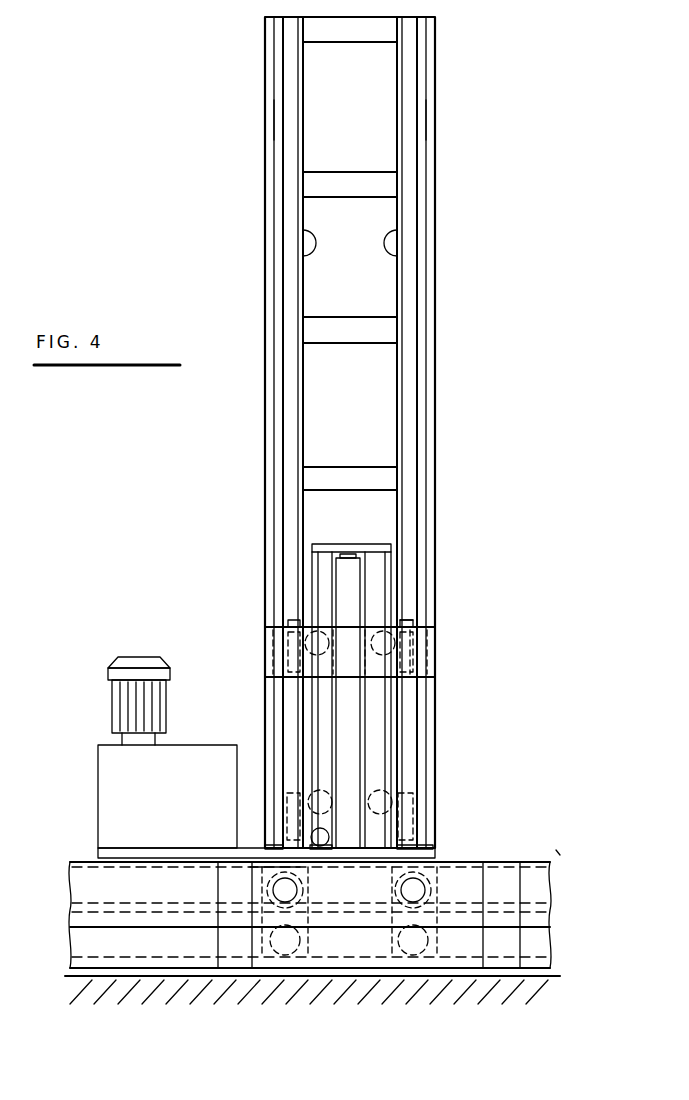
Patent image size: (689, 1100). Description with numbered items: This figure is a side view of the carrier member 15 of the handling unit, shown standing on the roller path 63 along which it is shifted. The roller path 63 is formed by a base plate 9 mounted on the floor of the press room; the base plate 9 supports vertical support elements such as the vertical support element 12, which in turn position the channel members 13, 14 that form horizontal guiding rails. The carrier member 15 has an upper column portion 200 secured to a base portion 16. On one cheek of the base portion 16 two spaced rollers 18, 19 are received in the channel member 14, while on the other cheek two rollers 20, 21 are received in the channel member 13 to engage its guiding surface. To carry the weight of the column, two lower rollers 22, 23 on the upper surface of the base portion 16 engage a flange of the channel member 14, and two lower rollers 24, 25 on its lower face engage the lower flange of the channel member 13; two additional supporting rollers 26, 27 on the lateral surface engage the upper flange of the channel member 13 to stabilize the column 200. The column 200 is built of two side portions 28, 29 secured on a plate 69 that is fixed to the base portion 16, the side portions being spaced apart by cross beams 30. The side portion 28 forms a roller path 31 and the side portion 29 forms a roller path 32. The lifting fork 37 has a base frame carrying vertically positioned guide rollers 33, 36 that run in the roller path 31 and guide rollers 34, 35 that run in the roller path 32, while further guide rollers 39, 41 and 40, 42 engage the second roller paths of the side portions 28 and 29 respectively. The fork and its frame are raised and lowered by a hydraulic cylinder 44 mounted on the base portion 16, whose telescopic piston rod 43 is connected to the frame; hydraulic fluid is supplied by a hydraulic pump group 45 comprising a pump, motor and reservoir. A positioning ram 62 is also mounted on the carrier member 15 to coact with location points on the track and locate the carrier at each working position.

The base plate 9 is at (100, 985).
The vertical support element 12 is at (230, 890).
The channel member 13 is at (548, 945).
The channel member 14 is at (545, 897).
The carrier member 15 is at (437, 318).
The base portion 16 is at (352, 935).
The roller 18 is at (265, 895).
The roller 19 is at (440, 890).
The roller 20 is at (285, 920).
The roller 21 is at (455, 925).
The lower roller 22 is at (335, 945).
The lower roller 23 is at (395, 940).
The lower roller 24 is at (300, 905).
The lower roller 25 is at (440, 935).
The supporting roller 26 is at (250, 860).
The supporting roller 27 is at (420, 880).
The side portion 28 is at (425, 125).
The side portion 29 is at (272, 118).
The cross beam 30 is at (338, 182).
The roller path 31 is at (385, 258).
The roller path 32 is at (300, 258).
The guide roller 33 is at (383, 630).
The guide roller 34 is at (297, 790).
The guide roller 35 is at (318, 800).
The guide roller 36 is at (380, 800).
The lifting fork 37 is at (385, 680).
The guide roller 39 is at (405, 625).
The guide roller 40 is at (310, 636).
The guide roller 41 is at (405, 800).
The guide roller 42 is at (318, 842).
The telescopic piston rod 43 is at (345, 548).
The hydraulic cylinder 44 is at (350, 573).
The hydraulic pump group 45 is at (130, 800).
The positioning ram 62 is at (340, 830).
The roller path 63 is at (560, 852).
The plate 69 is at (437, 845).
The upper column portion 200 is at (437, 388).